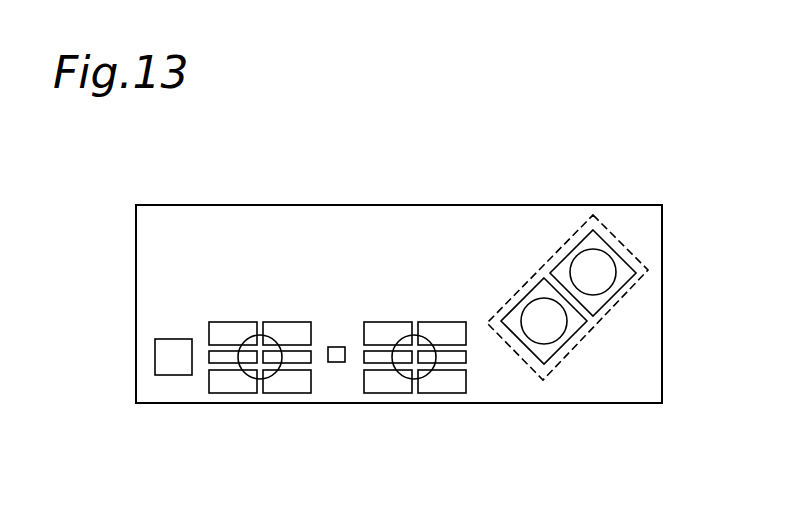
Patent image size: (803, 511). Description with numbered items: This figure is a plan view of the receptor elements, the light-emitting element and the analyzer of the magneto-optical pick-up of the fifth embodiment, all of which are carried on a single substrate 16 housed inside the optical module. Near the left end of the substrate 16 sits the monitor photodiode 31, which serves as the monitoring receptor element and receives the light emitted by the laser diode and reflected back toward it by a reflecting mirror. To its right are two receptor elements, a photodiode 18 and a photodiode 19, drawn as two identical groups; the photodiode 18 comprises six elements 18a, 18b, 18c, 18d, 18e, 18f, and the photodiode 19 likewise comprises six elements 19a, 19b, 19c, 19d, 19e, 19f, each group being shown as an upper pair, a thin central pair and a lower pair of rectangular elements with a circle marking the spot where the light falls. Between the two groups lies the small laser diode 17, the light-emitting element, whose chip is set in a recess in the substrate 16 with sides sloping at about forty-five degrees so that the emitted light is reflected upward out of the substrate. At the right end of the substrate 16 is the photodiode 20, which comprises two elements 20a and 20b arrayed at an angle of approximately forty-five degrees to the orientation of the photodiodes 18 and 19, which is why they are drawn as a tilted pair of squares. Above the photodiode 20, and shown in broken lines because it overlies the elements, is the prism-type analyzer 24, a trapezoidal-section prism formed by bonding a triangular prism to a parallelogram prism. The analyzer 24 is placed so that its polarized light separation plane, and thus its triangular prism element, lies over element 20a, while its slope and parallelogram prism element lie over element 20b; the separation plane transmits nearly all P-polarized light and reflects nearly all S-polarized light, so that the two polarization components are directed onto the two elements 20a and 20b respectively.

The substrate 16 is at (136, 258).
The laser diode 17 is at (335, 349).
The photodiode 18 is at (250, 304).
The element 18a is at (227, 327).
The element 18b is at (222, 357).
The element 18c is at (230, 386).
The element 18d is at (283, 327).
The element 18e is at (291, 358).
The element 18f is at (270, 386).
The photodiode 19 is at (408, 304).
The element 19a is at (447, 327).
The element 19b is at (460, 358).
The element 19c is at (442, 382).
The element 19d is at (381, 327).
The element 19e is at (374, 358).
The element 19f is at (388, 386).
The photodiode 20 is at (611, 293).
The element 20a is at (570, 327).
The element 20b is at (623, 268).
The prism-type analyzer 24 is at (622, 245).
The monitor photodiode 31 is at (158, 362).